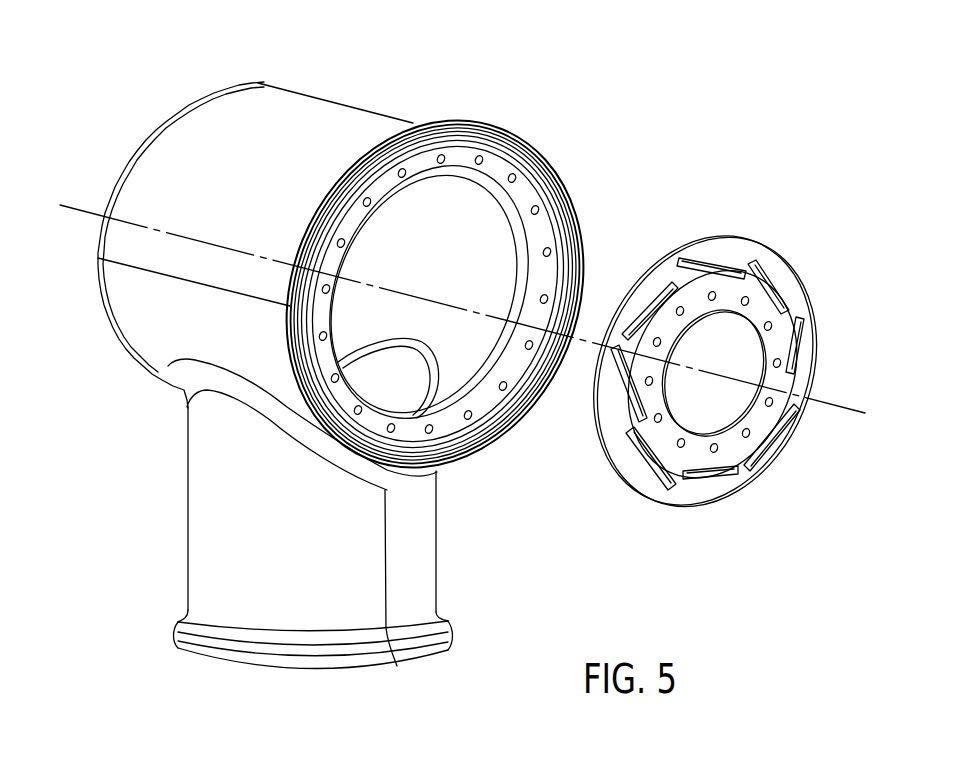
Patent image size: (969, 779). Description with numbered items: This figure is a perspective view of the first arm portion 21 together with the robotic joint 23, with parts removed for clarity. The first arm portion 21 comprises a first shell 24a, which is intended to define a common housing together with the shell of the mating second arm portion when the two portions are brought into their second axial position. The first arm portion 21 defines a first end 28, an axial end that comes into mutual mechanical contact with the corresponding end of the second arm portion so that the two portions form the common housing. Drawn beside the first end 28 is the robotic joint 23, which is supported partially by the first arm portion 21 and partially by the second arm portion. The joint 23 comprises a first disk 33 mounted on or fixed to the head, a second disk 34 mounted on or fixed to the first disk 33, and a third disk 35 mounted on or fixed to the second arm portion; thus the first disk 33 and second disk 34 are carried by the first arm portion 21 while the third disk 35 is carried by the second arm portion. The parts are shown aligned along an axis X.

The first arm portion 21 is at (269, 348).
The first shell 24a is at (323, 120).
The first end 28 is at (553, 178).
The robotic joint 23 is at (716, 347).
The third disk 35 is at (730, 232).
The second disk 34 is at (768, 313).
The first disk 33 is at (752, 355).
The axis X is at (843, 412).